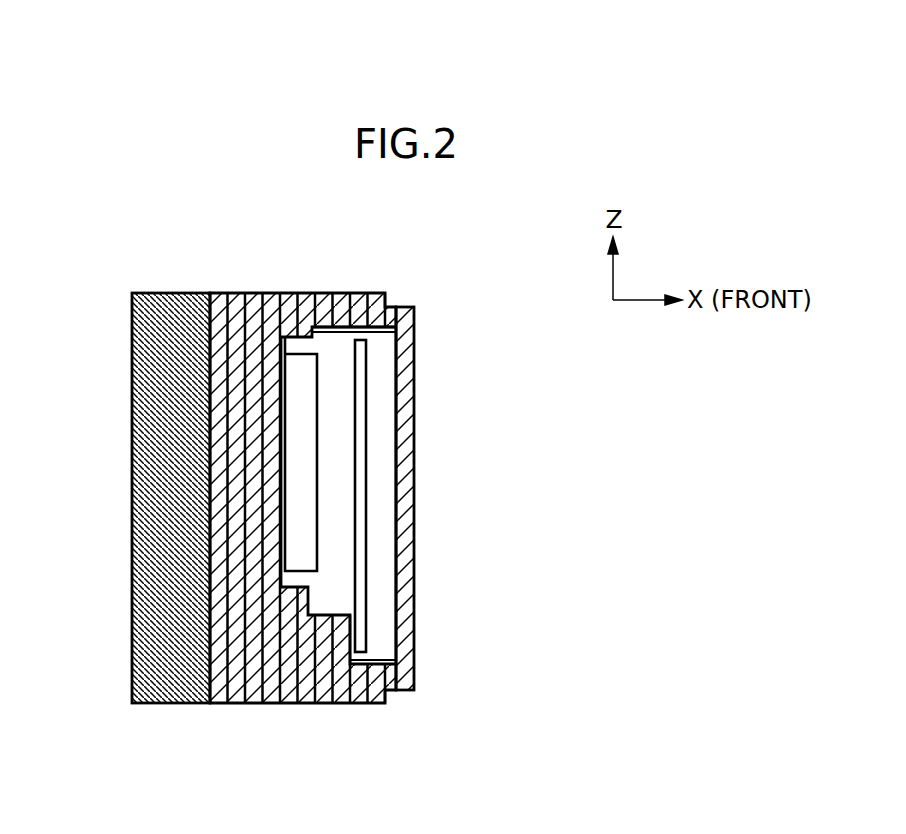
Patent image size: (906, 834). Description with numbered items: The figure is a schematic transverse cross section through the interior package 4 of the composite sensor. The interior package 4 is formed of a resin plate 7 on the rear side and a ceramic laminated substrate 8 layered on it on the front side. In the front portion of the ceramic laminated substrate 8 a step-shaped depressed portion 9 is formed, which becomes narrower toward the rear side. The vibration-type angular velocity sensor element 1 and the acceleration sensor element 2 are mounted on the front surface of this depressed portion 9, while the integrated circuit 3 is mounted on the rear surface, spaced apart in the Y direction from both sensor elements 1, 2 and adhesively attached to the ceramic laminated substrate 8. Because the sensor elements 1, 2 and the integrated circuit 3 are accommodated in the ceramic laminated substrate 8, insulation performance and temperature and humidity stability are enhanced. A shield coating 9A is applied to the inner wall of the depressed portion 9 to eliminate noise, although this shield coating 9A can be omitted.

The vibration-type angular velocity sensor element 1 is at (440, 496).
The acceleration sensor element 2 is at (368, 532).
The integrated circuit 3 is at (299, 368).
The interior package 4 is at (441, 300).
The resin plate 7 is at (165, 336).
The ceramic laminated substrate 8 is at (252, 307).
The step-shaped depressed portion 9 is at (339, 352).
The shield coating 9A is at (376, 332).